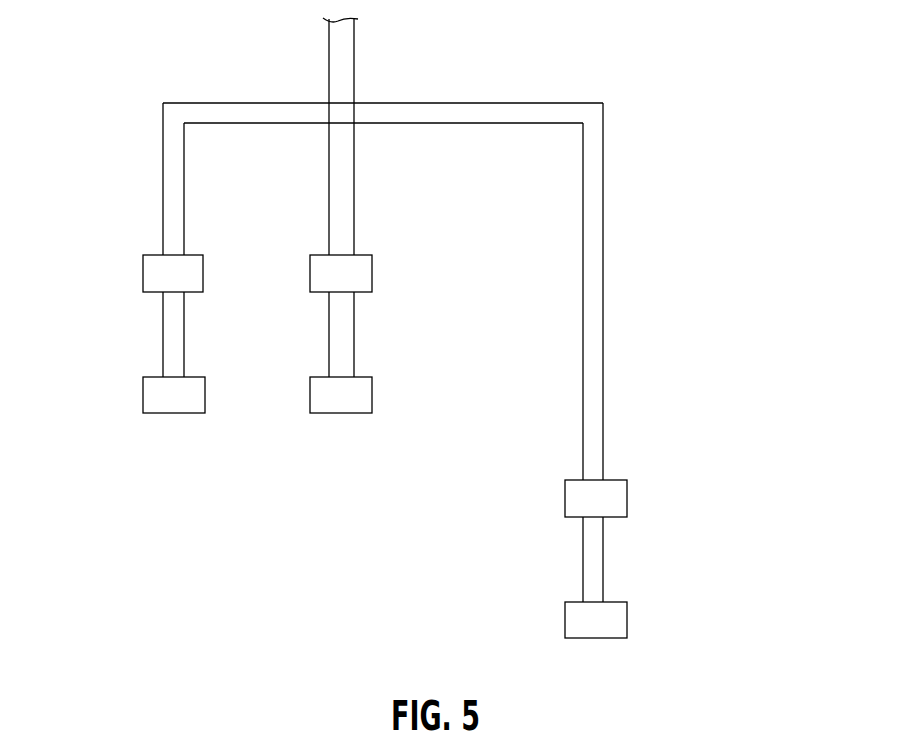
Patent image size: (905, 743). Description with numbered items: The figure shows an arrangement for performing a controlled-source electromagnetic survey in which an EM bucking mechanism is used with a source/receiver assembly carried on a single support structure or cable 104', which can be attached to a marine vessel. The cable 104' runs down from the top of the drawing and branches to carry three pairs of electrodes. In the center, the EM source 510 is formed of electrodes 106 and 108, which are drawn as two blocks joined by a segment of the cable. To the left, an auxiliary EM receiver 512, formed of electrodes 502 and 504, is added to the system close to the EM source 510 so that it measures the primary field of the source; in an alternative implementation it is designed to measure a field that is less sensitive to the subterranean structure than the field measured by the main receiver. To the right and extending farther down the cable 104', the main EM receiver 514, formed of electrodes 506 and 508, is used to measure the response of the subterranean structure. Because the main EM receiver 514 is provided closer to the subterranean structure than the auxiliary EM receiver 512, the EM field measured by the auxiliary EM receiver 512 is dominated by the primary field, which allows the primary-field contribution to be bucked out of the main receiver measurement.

The support structure or cable 104' is at (383, 136).
The electrode 106 is at (372, 270).
The electrode 108 is at (380, 392).
The electrode 502 is at (203, 272).
The electrode 504 is at (211, 392).
The electrode 506 is at (627, 497).
The electrode 508 is at (643, 613).
The EM source 510 is at (439, 334).
The auxiliary EM receiver 512 is at (155, 261).
The main EM receiver 514 is at (703, 370).